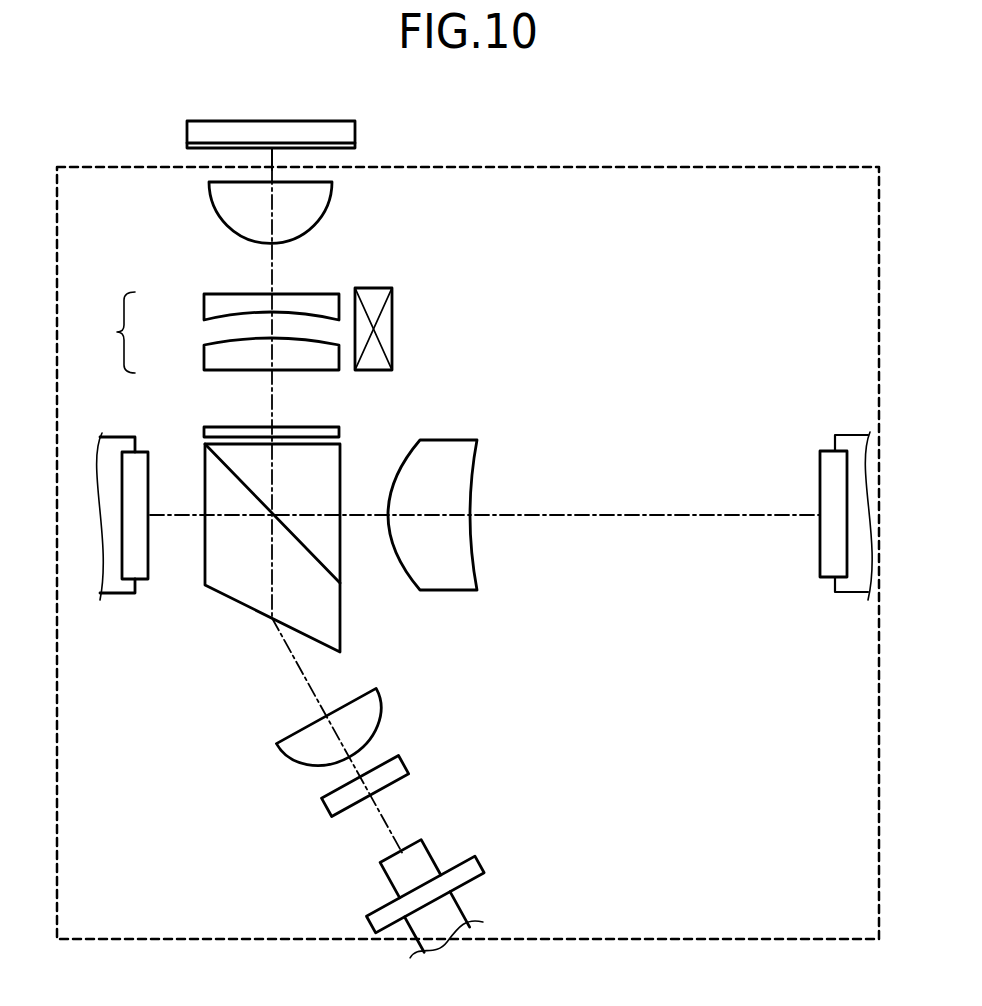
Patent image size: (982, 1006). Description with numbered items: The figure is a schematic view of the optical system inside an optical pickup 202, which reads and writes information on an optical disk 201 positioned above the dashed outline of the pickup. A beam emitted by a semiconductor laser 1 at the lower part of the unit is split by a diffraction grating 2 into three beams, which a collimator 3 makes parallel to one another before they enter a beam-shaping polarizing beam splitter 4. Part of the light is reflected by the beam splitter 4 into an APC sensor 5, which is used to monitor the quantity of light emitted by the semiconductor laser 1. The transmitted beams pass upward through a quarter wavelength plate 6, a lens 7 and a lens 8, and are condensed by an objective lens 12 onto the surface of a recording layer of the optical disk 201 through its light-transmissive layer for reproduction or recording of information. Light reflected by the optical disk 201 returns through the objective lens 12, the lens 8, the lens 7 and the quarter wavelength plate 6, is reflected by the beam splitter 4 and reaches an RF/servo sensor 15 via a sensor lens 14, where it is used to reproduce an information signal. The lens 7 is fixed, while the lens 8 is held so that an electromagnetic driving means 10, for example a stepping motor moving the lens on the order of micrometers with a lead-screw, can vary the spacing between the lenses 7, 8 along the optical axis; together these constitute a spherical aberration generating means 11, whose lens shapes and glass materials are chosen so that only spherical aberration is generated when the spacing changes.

The semiconductor laser 1 is at (486, 868).
The diffraction grating 2 is at (406, 760).
The collimator 3 is at (379, 691).
The beam-shaping polarizing beam splitter 4 is at (228, 597).
The APC sensor 5 is at (122, 518).
The quarter wavelength plate 6 is at (204, 428).
The lens 7 is at (204, 359).
The lens 8 is at (204, 311).
The electromagnetic driving means 10 is at (393, 326).
The spherical aberration generating means 11 is at (110, 332).
The objective lens 12 is at (217, 217).
The sensor lens 14 is at (450, 440).
The RF/servo sensor 15 is at (847, 512).
The optical disk 201 is at (357, 128).
The optical pickup 202 is at (695, 167).